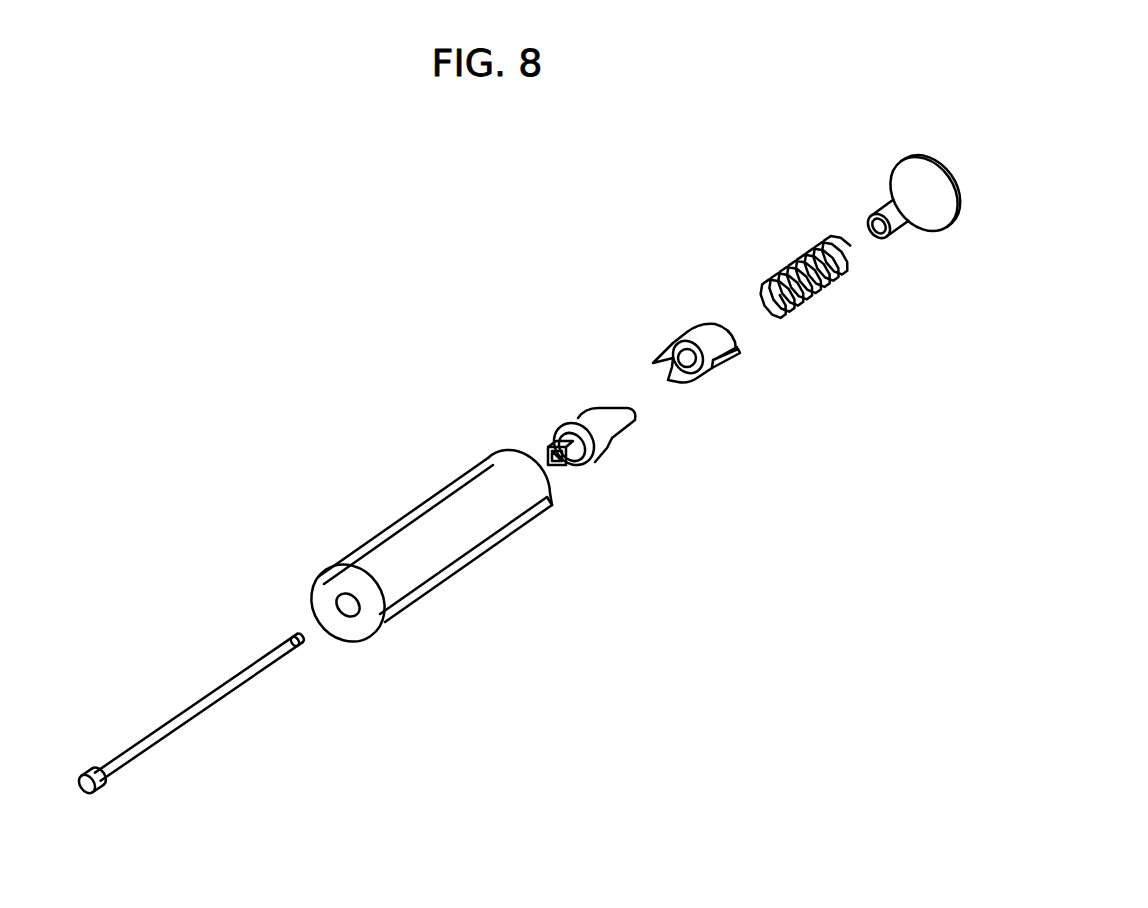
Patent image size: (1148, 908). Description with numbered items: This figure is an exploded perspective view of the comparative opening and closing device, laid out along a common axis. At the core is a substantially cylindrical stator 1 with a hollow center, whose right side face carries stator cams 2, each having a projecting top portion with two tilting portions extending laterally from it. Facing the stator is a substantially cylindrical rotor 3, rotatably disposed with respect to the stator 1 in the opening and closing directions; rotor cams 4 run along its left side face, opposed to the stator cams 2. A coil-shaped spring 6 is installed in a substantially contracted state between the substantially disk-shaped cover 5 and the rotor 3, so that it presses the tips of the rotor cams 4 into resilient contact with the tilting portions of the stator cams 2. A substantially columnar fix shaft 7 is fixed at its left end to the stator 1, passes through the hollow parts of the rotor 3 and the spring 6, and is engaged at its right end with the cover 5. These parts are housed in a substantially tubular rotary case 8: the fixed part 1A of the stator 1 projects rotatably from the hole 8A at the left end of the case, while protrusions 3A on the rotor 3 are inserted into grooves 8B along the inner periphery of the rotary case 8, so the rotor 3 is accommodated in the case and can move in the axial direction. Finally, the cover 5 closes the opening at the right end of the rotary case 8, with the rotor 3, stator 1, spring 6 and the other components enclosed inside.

The stator 1 is at (588, 417).
The fixed part 1A is at (580, 465).
The stator cam 2 is at (622, 421).
The rotor 3 is at (702, 326).
The protrusion 3A is at (737, 360).
The rotor cam 4 is at (695, 380).
The cover 5 is at (903, 160).
The spring 6 is at (820, 295).
The fix shaft 7 is at (172, 718).
The rotary case 8 is at (433, 515).
The hole 8A is at (357, 610).
The groove 8B is at (470, 557).